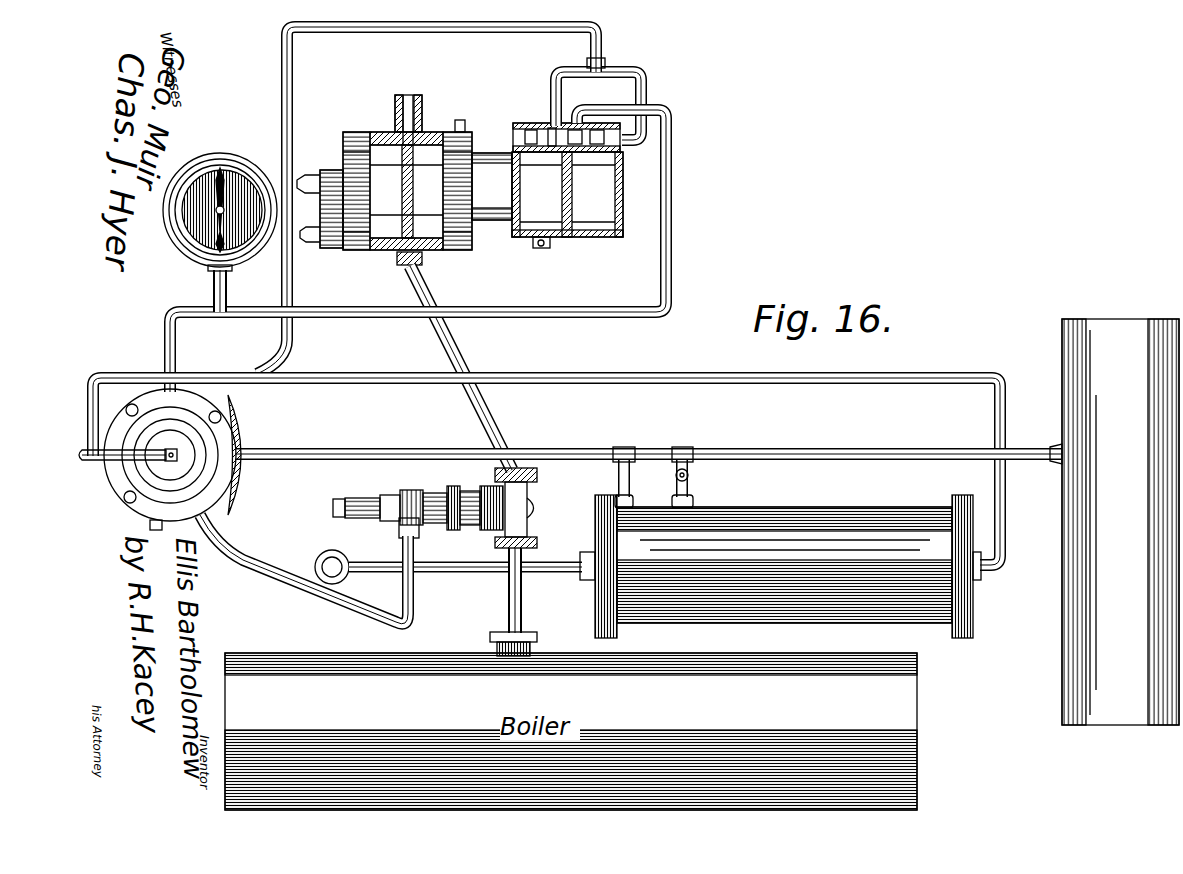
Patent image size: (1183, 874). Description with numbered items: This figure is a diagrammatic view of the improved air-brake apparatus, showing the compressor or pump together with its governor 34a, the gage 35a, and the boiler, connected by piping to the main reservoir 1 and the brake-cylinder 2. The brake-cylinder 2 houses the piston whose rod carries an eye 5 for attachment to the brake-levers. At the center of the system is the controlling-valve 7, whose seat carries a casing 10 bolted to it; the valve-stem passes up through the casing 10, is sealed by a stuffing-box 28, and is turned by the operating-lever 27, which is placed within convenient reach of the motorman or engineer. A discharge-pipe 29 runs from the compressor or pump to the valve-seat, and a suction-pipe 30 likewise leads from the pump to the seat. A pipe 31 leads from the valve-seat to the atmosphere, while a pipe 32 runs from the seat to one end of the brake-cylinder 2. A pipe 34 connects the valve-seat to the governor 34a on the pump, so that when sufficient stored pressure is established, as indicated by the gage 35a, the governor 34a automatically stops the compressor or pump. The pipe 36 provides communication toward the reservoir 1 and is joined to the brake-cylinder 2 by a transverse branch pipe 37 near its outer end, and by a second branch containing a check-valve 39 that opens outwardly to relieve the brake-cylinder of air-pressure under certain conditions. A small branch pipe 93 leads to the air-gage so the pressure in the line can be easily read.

The main reservoir 1 is at (1120, 522).
The brake-cylinder 2 is at (788, 566).
The eye 5 is at (455, 572).
The controlling-valve 7 is at (496, 602).
The casing 10 is at (218, 445).
The operating-lever 27 is at (100, 470).
The stuffing-box 28 is at (172, 455).
The discharge-pipe 29 is at (418, 338).
The suction-pipe 30 is at (427, 200).
The pipe 31 is at (150, 527).
The pipe 32 is at (546, 455).
The pipe 34 is at (304, 569).
The governor 34a is at (445, 500).
The gage 35a is at (220, 197).
The pipe 36 is at (700, 488).
The transverse branch pipe 37 is at (638, 477).
The check-valve 39 is at (690, 477).
The small branch pipe 93 is at (213, 287).